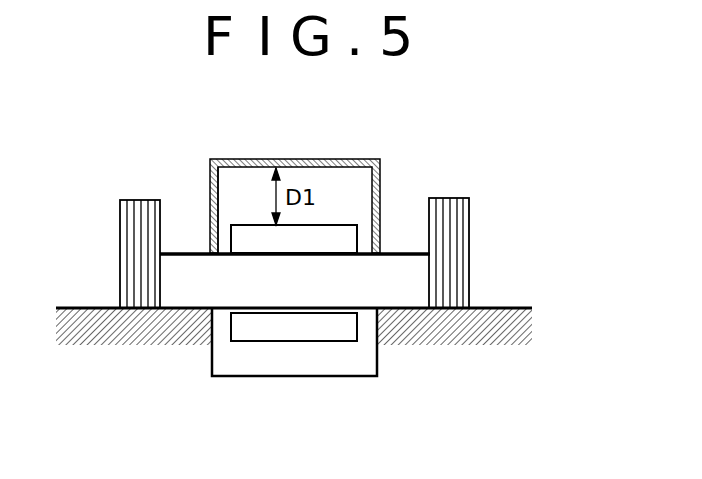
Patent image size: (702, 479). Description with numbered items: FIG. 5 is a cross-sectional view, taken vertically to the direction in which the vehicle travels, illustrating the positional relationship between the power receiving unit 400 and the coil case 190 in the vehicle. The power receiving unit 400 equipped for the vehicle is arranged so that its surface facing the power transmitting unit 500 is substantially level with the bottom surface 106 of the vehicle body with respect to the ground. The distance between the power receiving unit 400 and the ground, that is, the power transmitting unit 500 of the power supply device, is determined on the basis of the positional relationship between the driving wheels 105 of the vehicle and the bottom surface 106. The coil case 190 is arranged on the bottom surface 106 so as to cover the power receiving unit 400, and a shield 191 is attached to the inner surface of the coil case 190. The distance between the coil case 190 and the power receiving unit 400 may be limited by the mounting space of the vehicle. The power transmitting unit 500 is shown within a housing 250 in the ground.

The driving wheels 105 is at (445, 198).
The bottom surface 106 is at (409, 252).
The coil case 190 is at (343, 160).
The shield 191 is at (221, 187).
The power receiving unit 400 is at (345, 225).
The power transmitting unit 500 is at (265, 342).
The housing box 250 is at (334, 377).